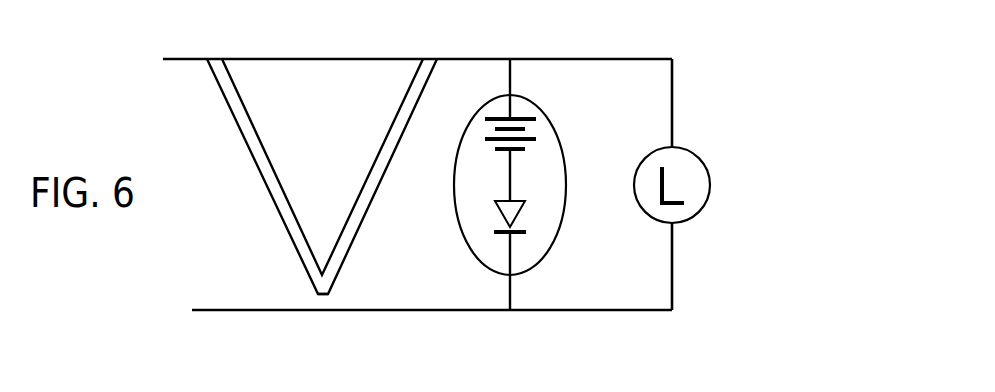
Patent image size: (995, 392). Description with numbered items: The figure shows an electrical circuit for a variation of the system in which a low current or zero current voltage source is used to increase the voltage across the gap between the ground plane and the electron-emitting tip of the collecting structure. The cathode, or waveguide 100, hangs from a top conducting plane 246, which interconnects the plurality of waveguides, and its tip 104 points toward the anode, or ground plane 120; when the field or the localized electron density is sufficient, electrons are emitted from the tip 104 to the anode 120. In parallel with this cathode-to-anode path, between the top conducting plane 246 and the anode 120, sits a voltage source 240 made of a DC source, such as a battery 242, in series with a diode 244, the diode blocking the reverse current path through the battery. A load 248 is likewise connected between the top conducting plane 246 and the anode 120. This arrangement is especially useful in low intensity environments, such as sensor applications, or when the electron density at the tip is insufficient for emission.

The cathode (waveguide) 100 is at (416, 76).
The tip 104 is at (322, 294).
The anode (ground plane) 120 is at (267, 310).
The voltage source 240 is at (547, 117).
The DC source (battery) 242 is at (532, 140).
The diode 244 is at (512, 211).
The top conducting plane 246 is at (547, 59).
The load 248 is at (690, 148).